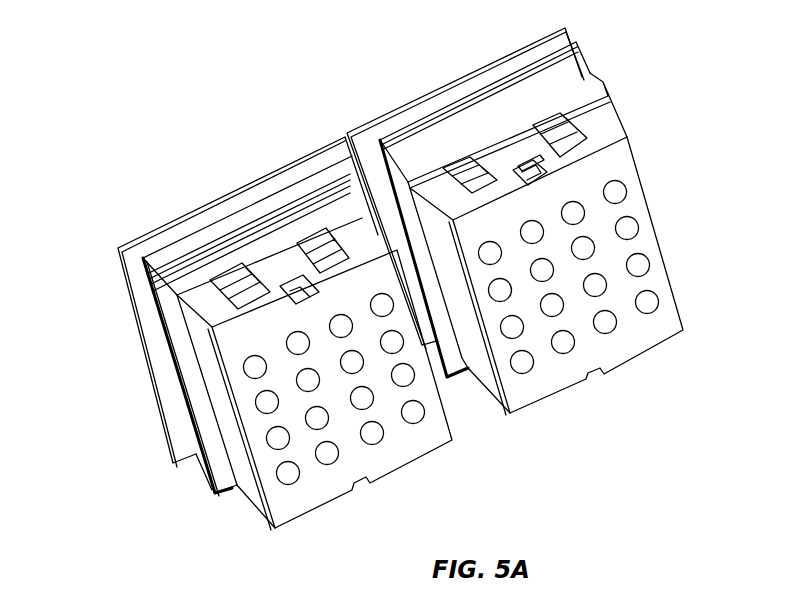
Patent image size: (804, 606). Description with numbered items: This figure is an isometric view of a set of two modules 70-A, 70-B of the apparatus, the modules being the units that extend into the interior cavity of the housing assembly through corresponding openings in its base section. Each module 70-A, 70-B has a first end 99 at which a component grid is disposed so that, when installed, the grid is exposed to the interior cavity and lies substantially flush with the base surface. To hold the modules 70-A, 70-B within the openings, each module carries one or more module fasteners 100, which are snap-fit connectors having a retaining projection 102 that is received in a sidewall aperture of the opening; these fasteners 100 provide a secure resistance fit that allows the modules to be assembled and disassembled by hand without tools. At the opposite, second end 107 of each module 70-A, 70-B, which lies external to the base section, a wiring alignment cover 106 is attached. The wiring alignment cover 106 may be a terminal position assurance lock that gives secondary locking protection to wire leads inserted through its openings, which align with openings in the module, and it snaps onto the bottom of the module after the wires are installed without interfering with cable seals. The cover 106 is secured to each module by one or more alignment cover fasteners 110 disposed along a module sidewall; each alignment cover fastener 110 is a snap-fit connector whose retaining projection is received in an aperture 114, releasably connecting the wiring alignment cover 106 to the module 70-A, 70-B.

The module 70-A is at (209, 182).
The module 70-B is at (398, 92).
The first end 99 is at (112, 247).
The module fastener 100 is at (226, 282).
The retaining projection 102 is at (218, 295).
The wiring alignment cover 106 is at (312, 505).
The second end 107 is at (229, 521).
The alignment cover fastener 110 is at (537, 180).
The aperture 114 is at (548, 170).